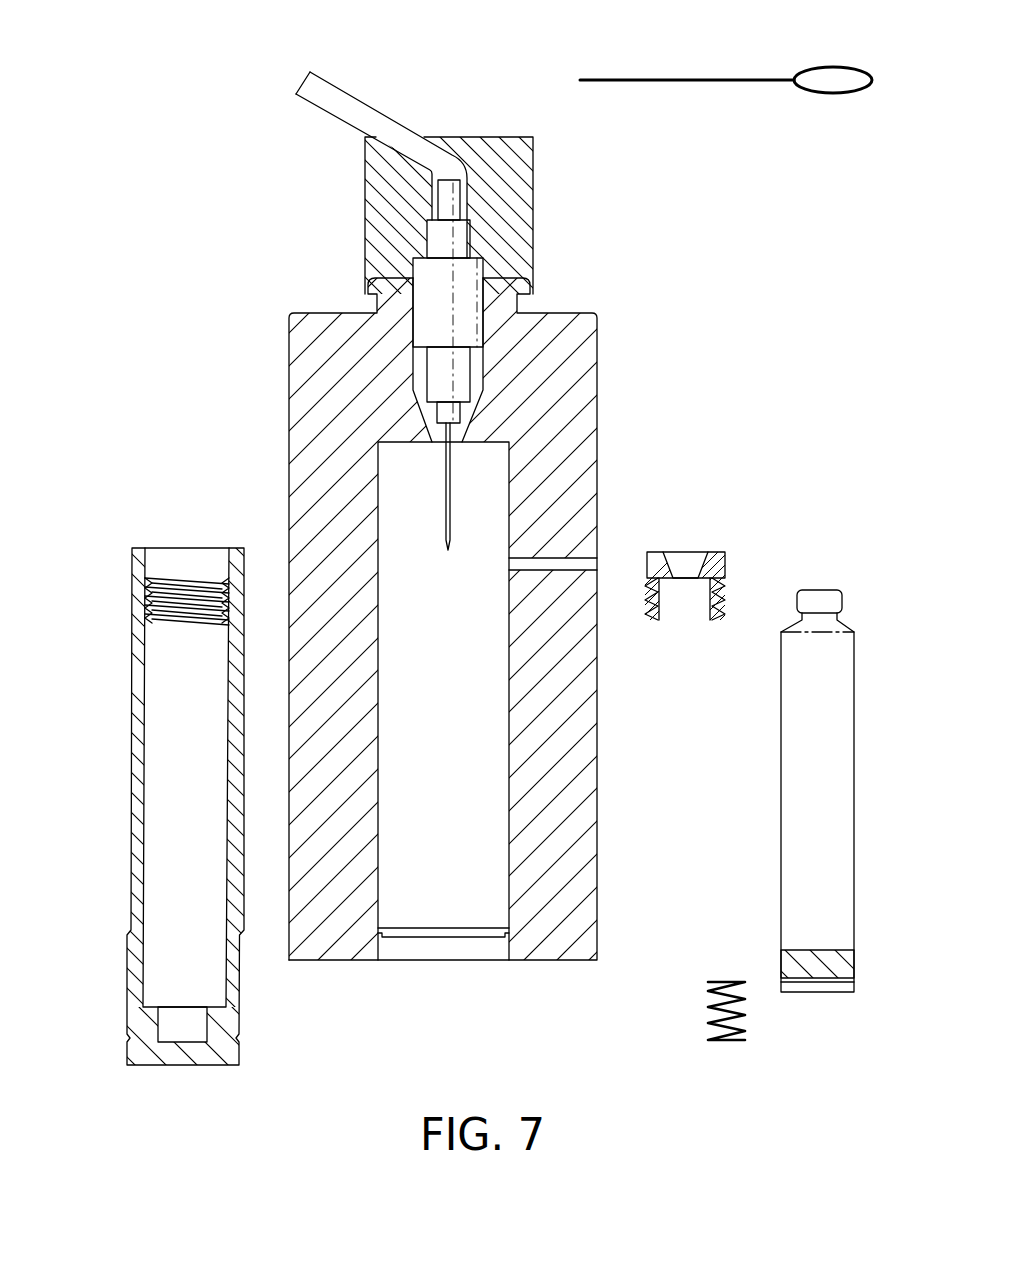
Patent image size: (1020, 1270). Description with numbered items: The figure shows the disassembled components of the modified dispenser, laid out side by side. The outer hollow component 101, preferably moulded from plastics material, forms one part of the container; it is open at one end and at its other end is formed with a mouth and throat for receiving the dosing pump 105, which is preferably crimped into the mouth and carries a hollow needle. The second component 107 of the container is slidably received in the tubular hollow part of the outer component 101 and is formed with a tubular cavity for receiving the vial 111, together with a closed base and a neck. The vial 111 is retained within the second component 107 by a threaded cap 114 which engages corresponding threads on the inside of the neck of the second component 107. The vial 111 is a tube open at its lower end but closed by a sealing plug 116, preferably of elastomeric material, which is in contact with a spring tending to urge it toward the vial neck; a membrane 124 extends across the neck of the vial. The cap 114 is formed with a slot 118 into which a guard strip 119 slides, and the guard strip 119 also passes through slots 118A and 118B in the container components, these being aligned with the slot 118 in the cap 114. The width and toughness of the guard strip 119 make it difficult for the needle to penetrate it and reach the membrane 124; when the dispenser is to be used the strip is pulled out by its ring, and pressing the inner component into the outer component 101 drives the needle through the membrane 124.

The outer hollow component 101 is at (305, 427).
The pump 105 is at (465, 280).
The second component 107 is at (131, 685).
The vial 111 is at (815, 780).
The threaded cap 114 is at (720, 612).
The sealing plug 116 is at (813, 947).
The slot 118 is at (718, 565).
The slot 118A is at (228, 563).
The slot 118B is at (580, 560).
The guard strip 119 is at (701, 78).
The membrane 124 is at (828, 590).